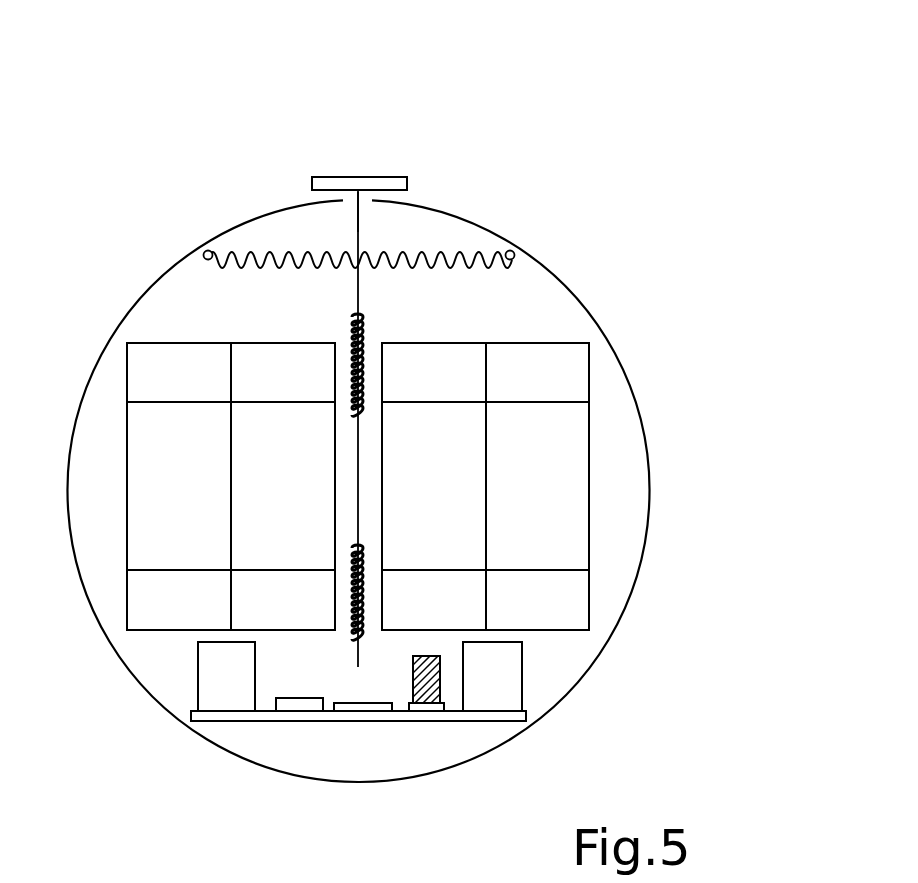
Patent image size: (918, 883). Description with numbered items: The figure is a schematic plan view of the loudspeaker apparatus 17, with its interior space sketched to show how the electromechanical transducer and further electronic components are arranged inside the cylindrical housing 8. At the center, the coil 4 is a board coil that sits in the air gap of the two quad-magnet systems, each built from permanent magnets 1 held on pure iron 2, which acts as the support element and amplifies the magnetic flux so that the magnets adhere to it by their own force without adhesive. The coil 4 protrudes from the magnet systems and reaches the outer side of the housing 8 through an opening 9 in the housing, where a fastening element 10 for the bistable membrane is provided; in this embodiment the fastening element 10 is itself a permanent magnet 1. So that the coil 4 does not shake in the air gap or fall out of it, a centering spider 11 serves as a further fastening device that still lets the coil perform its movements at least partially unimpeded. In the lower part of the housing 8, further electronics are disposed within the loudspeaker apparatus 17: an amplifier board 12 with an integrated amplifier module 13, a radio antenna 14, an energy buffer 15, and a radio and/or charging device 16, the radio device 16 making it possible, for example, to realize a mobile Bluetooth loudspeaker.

The permanent magnet 1 is at (135, 361).
The pure iron 2 is at (510, 472).
The coil 4 is at (357, 472).
The cylindrical housing 8 is at (572, 293).
The opening 9 is at (352, 210).
The fastening element 10 is at (372, 177).
The centering spider 11 is at (427, 245).
The amplifier board 12 is at (222, 723).
The amplifier module 13 is at (302, 721).
The radio antenna 14 is at (427, 721).
The energy buffer 15 is at (492, 700).
The radio and/or charging device 16 is at (363, 721).
The loudspeaker apparatus 17 is at (534, 97).